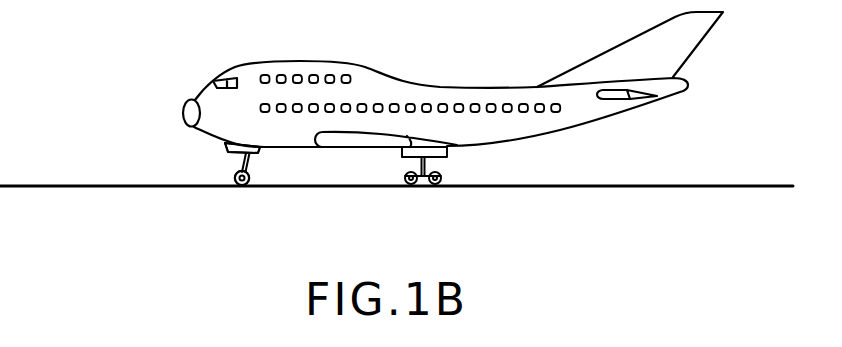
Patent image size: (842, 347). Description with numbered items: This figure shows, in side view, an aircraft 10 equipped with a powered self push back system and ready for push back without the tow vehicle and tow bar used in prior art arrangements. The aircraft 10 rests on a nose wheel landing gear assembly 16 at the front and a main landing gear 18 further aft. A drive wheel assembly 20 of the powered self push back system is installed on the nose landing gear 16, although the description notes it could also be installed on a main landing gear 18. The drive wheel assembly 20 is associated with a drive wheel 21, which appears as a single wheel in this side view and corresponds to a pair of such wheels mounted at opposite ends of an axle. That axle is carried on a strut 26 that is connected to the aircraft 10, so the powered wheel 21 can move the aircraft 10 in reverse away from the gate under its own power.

The aircraft 10 is at (374, 86).
The nose wheel landing gear assembly 16 is at (258, 167).
The main landing gear 18 is at (445, 164).
The drive wheel assembly 20 is at (233, 176).
The drive wheel 21 is at (240, 187).
The strut 26 is at (238, 161).